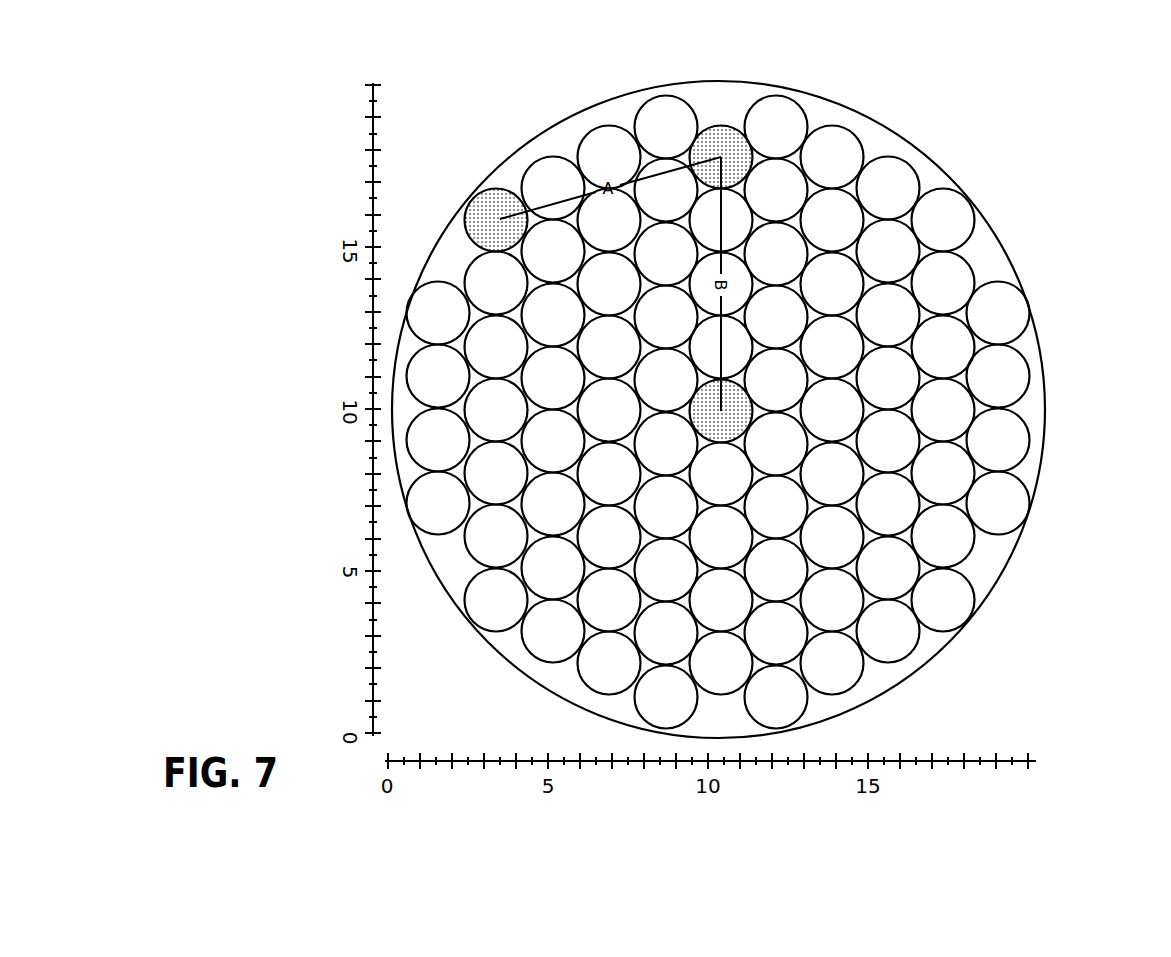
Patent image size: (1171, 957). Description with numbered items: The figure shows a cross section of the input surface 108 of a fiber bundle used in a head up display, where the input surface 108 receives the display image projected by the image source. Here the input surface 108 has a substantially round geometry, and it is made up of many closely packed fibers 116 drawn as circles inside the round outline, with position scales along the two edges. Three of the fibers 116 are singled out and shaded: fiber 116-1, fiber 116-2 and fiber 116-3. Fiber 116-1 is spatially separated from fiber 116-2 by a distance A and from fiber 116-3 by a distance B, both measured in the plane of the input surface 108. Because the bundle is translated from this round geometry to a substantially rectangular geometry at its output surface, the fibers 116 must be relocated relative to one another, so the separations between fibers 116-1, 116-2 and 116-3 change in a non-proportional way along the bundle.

The input surface 108 is at (1022, 112).
The fibers 116 is at (990, 446).
The fiber 116-1 is at (721, 157).
The fiber 116-2 is at (496, 220).
The fiber 116-3 is at (721, 411).